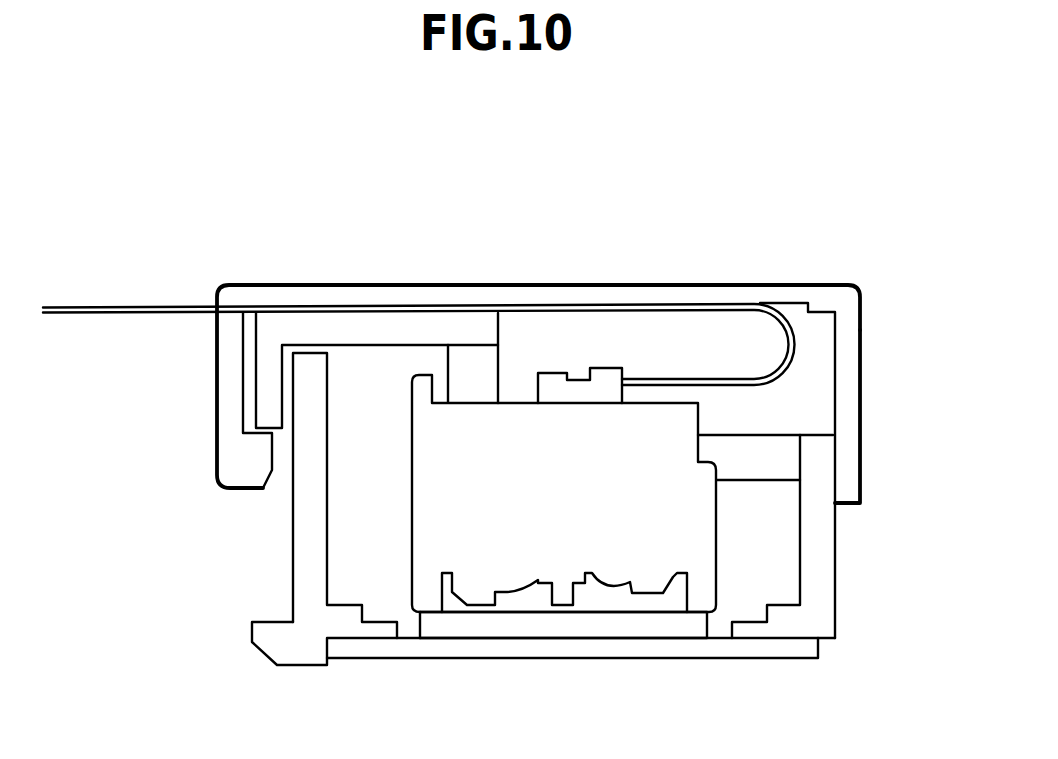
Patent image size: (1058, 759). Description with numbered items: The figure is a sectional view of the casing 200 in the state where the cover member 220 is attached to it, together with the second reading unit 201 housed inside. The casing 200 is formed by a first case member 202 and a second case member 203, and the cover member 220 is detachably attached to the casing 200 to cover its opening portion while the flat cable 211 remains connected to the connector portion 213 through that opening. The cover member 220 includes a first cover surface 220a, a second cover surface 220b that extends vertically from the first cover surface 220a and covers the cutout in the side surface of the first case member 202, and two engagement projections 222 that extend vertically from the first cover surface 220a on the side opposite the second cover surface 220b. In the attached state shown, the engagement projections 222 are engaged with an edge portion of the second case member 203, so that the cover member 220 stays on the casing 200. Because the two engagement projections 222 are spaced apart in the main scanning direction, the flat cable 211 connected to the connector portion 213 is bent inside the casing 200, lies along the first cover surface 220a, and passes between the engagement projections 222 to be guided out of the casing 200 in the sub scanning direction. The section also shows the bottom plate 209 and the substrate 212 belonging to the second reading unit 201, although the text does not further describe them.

The casing 200 is at (511, 213).
The second reading unit 201 is at (412, 543).
The first case member 202 is at (820, 577).
The second case member 203 is at (256, 397).
The base plate 209 is at (615, 659).
The flat cable 211 is at (101, 316).
The substrate 212 is at (488, 625).
The connector portion 213 is at (606, 367).
The cover member 220 is at (325, 283).
The first cover surface 220a is at (773, 283).
The second cover surface 220b is at (860, 377).
The engagement projection 222 is at (245, 477).